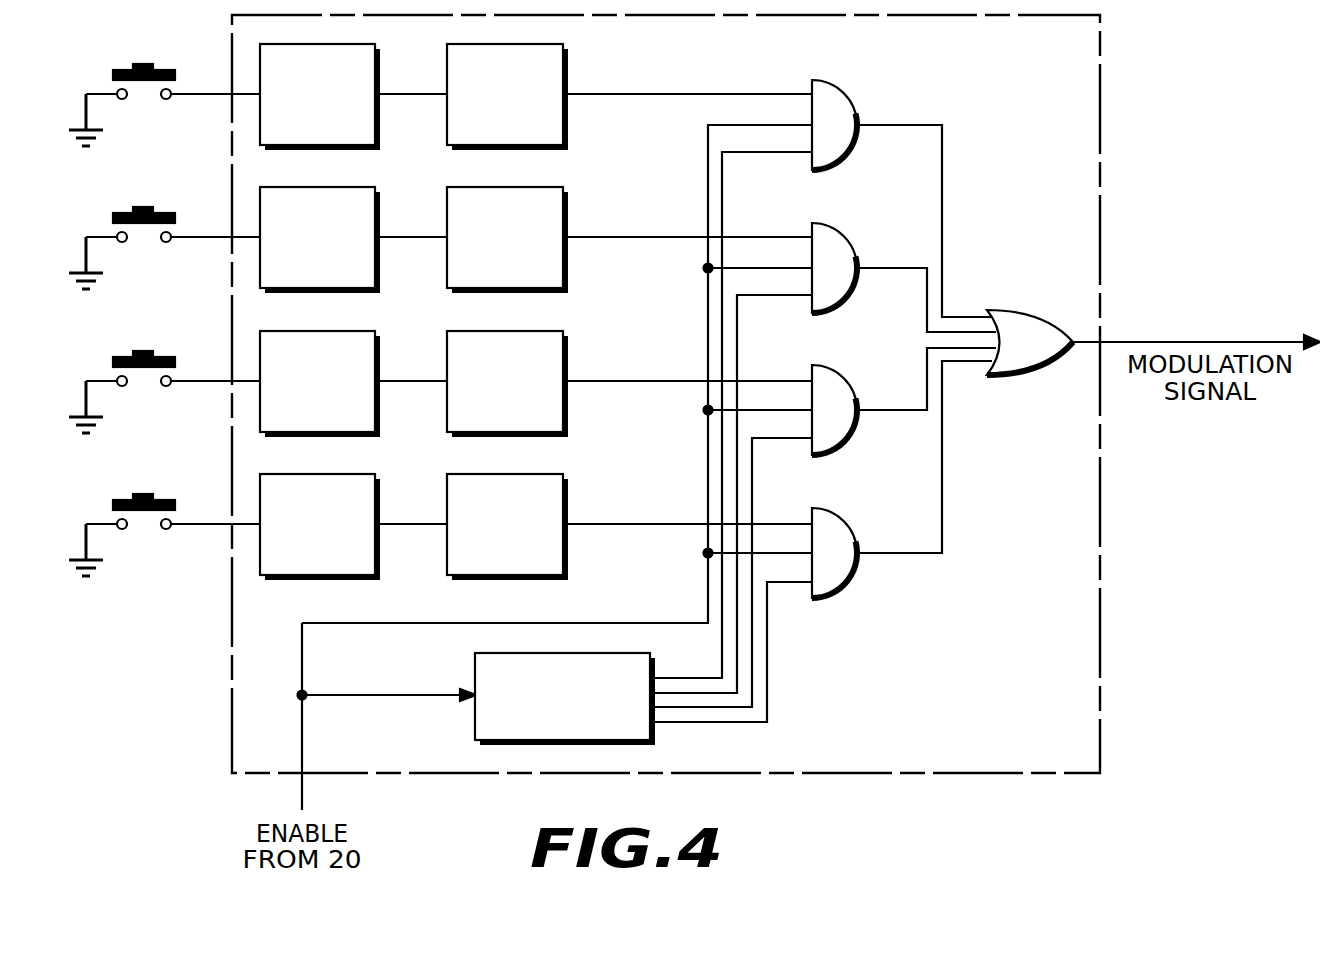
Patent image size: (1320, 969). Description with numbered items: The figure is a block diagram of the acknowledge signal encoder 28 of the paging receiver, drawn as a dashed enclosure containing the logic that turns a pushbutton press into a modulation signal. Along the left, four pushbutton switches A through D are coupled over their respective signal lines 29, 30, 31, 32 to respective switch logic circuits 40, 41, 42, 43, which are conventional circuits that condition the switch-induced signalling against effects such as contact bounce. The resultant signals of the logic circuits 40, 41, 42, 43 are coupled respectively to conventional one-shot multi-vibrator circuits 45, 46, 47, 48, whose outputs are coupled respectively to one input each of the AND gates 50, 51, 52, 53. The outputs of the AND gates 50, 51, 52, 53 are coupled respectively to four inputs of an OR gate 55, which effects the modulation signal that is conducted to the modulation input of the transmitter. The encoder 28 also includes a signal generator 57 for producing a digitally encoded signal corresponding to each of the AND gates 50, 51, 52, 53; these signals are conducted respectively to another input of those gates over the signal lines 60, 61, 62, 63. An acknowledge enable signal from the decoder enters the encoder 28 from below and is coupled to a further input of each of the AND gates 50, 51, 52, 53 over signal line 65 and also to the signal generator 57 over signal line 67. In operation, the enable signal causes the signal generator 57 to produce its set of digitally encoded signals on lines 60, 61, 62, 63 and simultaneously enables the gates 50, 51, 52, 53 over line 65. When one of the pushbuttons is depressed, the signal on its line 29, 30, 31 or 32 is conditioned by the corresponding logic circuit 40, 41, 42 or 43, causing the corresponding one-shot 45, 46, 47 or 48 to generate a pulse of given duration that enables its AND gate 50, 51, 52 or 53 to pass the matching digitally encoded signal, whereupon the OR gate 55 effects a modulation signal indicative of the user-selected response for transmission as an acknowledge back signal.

The encoder 28 is at (987, 647).
The signal line 29 is at (219, 98).
The signal line 30 is at (219, 241).
The signal line 31 is at (219, 385).
The signal line 32 is at (219, 528).
The switch logic circuit 40 is at (378, 123).
The switch logic circuit 41 is at (378, 266).
The switch logic circuit 42 is at (378, 410).
The switch logic circuit 43 is at (378, 553).
The one-shot multi-vibrator circuit 45 is at (566, 123).
The one-shot multi-vibrator circuit 46 is at (566, 266).
The one-shot multi-vibrator circuit 47 is at (566, 410).
The one-shot multi-vibrator circuit 48 is at (566, 553).
The AND gate 50 is at (853, 152).
The AND gate 51 is at (853, 295).
The AND gate 52 is at (853, 437).
The AND gate 53 is at (853, 580).
The OR gate 55 is at (1040, 378).
The signal generator 57 is at (472, 710).
The signal line 60 is at (722, 176).
The signal line 61 is at (737, 318).
The signal line 62 is at (752, 458).
The signal line 63 is at (767, 618).
The signal line 65 is at (708, 146).
The signal line 67 is at (340, 692).